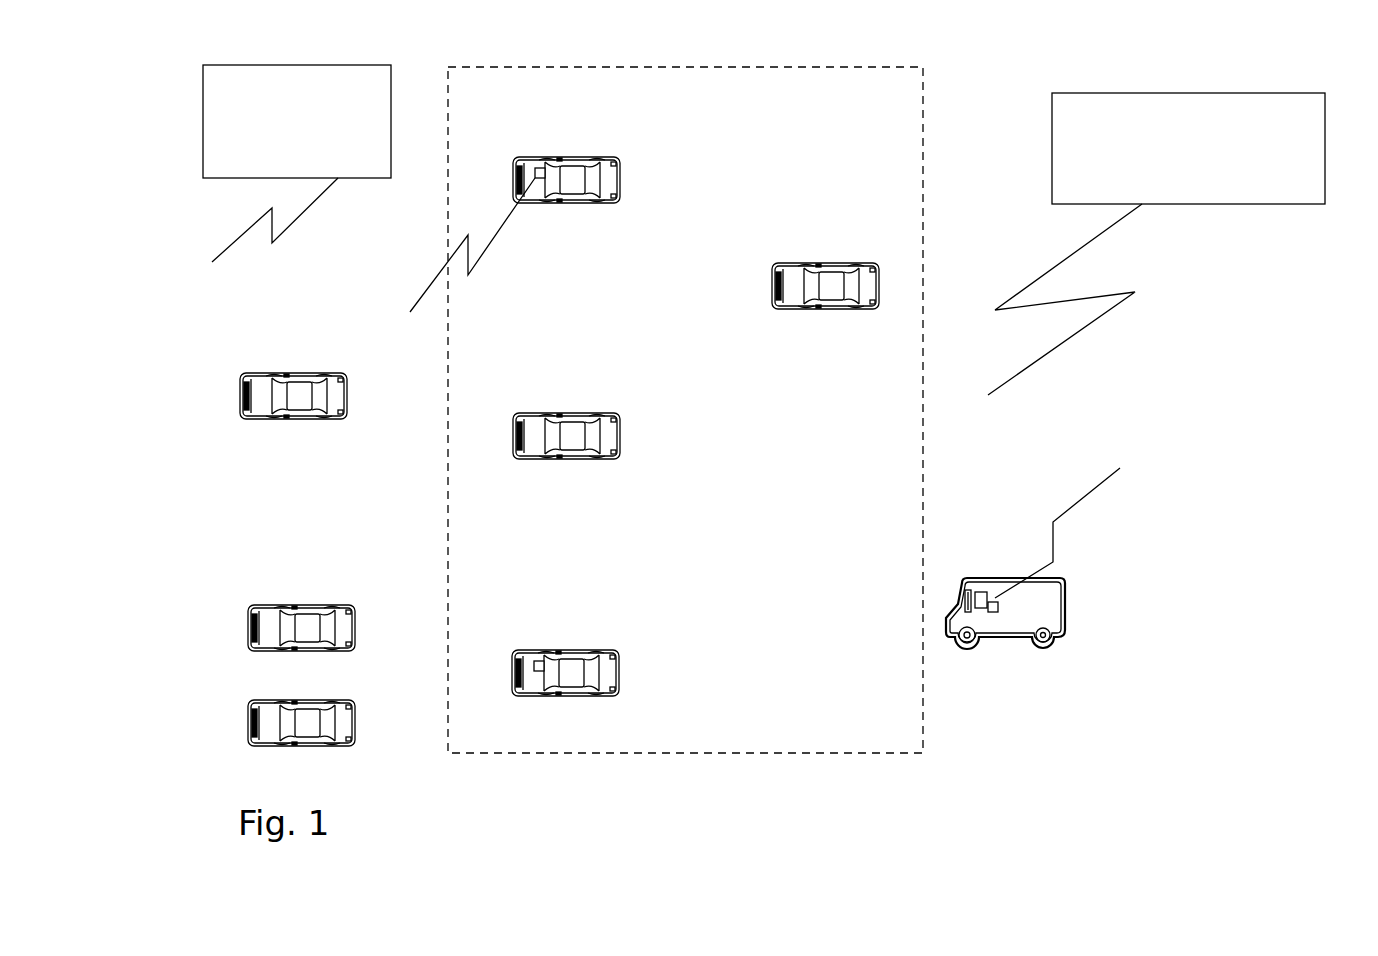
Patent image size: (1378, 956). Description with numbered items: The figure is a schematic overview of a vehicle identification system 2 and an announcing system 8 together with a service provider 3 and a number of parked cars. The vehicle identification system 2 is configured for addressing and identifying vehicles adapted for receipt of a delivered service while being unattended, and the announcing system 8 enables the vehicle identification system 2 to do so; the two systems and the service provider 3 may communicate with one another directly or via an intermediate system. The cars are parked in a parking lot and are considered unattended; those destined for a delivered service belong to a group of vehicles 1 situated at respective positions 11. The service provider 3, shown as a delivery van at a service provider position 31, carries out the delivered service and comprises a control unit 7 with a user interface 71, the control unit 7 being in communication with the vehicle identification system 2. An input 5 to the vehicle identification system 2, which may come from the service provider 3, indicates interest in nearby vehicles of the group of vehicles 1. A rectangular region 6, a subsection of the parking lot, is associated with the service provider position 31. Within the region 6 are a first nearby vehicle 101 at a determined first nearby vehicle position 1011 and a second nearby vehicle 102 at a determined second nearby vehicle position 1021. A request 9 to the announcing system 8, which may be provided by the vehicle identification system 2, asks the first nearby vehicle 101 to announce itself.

The group of vehicles 1 is at (288, 435).
The positions 11 is at (317, 586).
The first nearby vehicle 101 is at (607, 141).
The first nearby vehicle position 1011 is at (687, 134).
The second nearby vehicle 102 is at (585, 631).
The second nearby vehicle position 1021 is at (676, 627).
The vehicle identification system 2 is at (1156, 244).
The service provider 3 is at (1076, 579).
The service provider position 31 is at (1092, 583).
The input 5 is at (1228, 216).
The region 6 is at (758, 753).
The control unit 7 is at (998, 612).
The user interface 71 is at (1040, 646).
The announcing system 8 is at (535, 178).
The request 9 is at (361, 190).